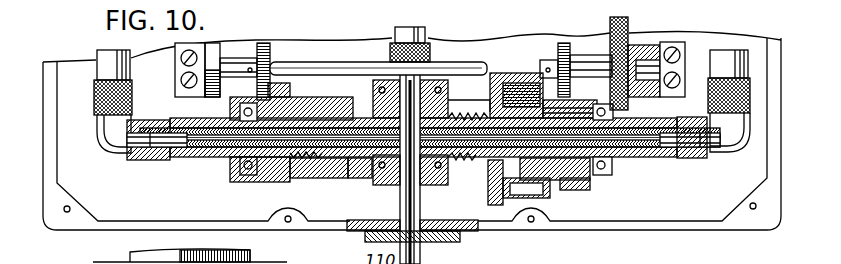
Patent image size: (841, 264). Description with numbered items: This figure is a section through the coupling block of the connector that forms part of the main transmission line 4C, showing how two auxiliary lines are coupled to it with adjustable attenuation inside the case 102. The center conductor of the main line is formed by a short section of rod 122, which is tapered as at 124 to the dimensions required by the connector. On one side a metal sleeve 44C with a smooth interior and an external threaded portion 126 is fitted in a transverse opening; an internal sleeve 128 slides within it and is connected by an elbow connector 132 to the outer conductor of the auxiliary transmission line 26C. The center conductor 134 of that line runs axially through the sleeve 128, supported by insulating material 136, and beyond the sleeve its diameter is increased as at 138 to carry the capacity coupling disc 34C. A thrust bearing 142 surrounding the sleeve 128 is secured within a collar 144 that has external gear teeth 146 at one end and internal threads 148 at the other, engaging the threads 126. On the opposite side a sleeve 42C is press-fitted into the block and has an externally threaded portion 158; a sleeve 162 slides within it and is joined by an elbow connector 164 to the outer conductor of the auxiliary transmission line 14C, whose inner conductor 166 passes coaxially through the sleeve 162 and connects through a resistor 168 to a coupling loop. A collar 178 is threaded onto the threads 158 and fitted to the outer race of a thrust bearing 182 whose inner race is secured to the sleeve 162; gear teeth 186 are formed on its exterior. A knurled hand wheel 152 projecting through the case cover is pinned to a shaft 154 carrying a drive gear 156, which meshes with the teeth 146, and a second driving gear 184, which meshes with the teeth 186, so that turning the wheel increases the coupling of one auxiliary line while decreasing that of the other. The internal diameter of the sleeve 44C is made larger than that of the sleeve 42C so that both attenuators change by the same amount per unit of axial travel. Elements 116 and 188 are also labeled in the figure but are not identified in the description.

The case 102 is at (52, 222).
The auxiliary transmission line 14C is at (100, 68).
The elbow connector 164 is at (107, 140).
The inner conductor 166 is at (190, 152).
The sleeve 162 is at (202, 158).
The insulating material 136 is at (630, 153).
The center conductor 134 is at (652, 148).
The elbow connector 132 is at (726, 147).
The auxiliary transmission line 26C is at (732, 50).
The externally threaded portion 158 is at (302, 98).
The bearing block 116 is at (371, 101).
The sleeve 42C is at (362, 165).
The rod 122 is at (386, 180).
The tapered portion 124 is at (420, 198).
The metal sleeve 44C is at (448, 172).
The threaded portion 126 is at (487, 165).
The thrust bearing 182 is at (240, 172).
The collar 178 is at (278, 190).
The resistor 168 is at (342, 174).
The second driving gear 184 is at (268, 33).
The gear teeth 186 is at (283, 90).
The shaft 154 is at (353, 63).
The main transmission line 4C is at (413, 28).
The housing block 188 is at (497, 73).
The internal threads 148 is at (513, 103).
The increased-diameter portion 138 is at (468, 99).
The capacity coupling disc 34C is at (487, 116).
The thrust bearing 142 is at (612, 116).
The internal sleeve 128 is at (592, 182).
The external gear teeth 146 is at (580, 190).
The collar 144 is at (550, 190).
The drive gear 156 is at (565, 43).
The knurled hand wheel 152 is at (622, 15).